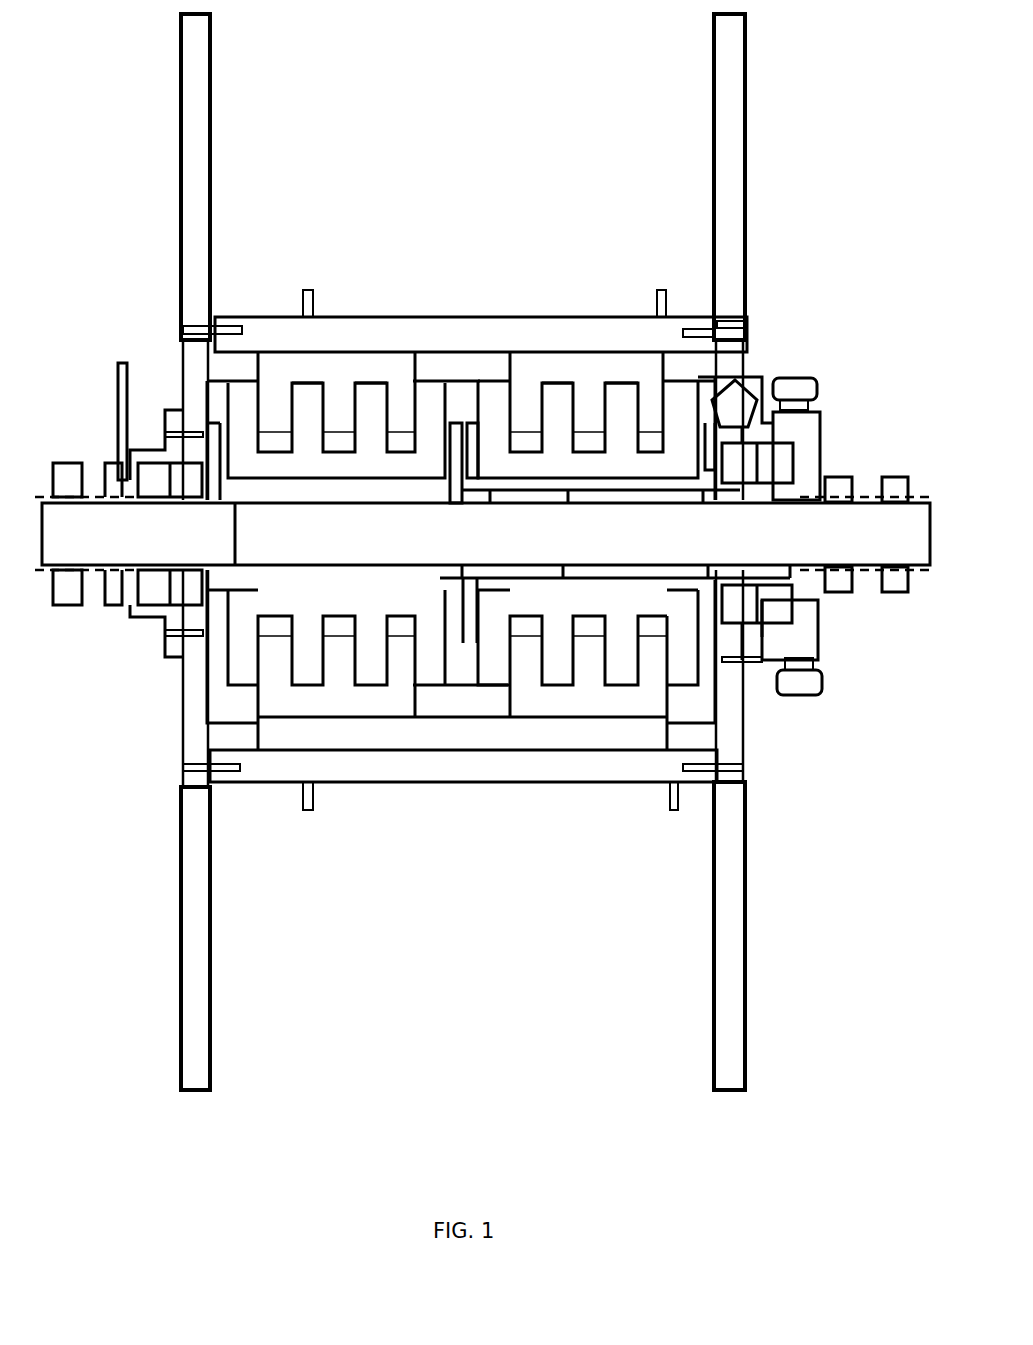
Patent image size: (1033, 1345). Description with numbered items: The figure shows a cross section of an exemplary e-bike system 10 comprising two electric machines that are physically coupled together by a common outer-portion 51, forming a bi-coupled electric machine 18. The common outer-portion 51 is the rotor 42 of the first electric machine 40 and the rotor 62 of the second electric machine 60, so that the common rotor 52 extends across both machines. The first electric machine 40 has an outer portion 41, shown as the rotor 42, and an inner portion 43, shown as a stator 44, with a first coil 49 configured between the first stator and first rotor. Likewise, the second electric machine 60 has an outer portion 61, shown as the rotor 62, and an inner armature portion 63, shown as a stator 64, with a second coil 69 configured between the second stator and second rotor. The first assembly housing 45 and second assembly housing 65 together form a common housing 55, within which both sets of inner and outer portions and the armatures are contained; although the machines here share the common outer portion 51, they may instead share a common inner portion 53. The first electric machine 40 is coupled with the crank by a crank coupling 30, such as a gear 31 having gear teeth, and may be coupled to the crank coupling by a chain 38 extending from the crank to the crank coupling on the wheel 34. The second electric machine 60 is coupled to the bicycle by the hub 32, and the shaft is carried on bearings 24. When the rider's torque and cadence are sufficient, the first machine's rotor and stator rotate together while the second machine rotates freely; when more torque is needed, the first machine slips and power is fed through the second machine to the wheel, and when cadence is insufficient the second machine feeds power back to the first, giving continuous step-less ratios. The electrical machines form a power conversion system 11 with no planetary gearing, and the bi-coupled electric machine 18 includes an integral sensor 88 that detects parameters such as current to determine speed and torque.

The e-bike system 10 is at (770, 200).
The power conversion system 11 is at (168, 250).
The bi-coupled electric machine 18 is at (283, 202).
The bearing 24 is at (893, 497).
The crank coupling 30 is at (812, 430).
The gear 31 is at (812, 600).
The hub 32 is at (194, 385).
The wheel 34 is at (723, 98).
The chain 38 is at (795, 390).
The first electric machine 40 is at (615, 397).
The outer portion 41 is at (555, 377).
The rotor 42 is at (587, 378).
The inner portion 43 is at (567, 415).
The stator 44 is at (631, 415).
The first assembly housing 45 is at (697, 363).
The first coil 49 is at (653, 433).
The common outer-portion 51 is at (467, 335).
The common rotor 52 is at (518, 333).
The common inner portion 53 is at (564, 466).
The common housing 55 is at (403, 338).
The second electric machine 60 is at (310, 388).
The outer portion 61 is at (332, 367).
The rotor 62 is at (360, 370).
The inner armature portion 63 is at (384, 415).
The stator 64 is at (317, 415).
The second assembly housing 65 is at (180, 340).
The second coil 69 is at (275, 433).
The integral sensor 88 is at (738, 395).